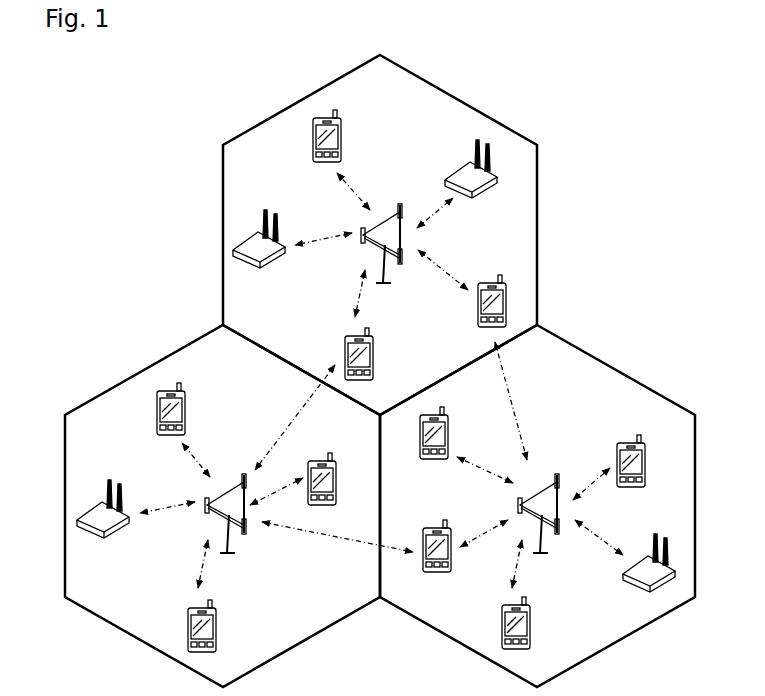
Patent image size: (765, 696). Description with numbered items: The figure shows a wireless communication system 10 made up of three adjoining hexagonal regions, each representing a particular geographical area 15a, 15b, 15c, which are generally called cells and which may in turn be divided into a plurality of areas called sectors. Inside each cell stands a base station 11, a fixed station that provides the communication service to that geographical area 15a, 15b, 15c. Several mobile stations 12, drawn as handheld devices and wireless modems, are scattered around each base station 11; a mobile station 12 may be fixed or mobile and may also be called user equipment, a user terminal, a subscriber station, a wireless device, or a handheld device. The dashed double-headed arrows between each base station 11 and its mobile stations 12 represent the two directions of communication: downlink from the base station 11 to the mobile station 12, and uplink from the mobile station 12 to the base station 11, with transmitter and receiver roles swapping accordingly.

The wireless communication system 10 is at (603, 150).
The base station 11 is at (392, 210).
The mobile station 12 is at (341, 136).
The geographical area 15a is at (537, 225).
The geographical area 15b is at (637, 382).
The geographical area 15c is at (125, 380).